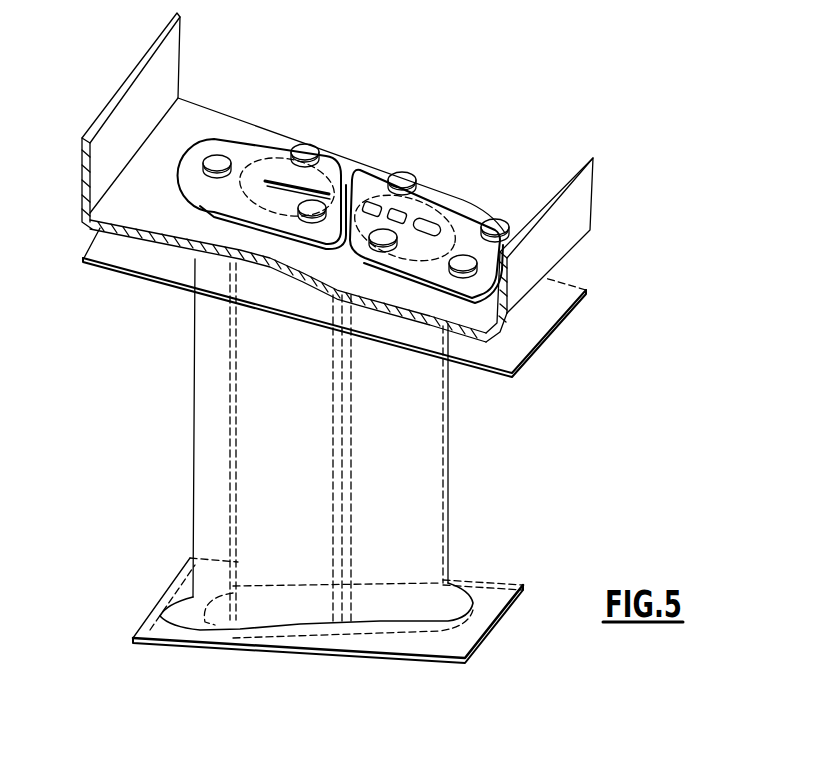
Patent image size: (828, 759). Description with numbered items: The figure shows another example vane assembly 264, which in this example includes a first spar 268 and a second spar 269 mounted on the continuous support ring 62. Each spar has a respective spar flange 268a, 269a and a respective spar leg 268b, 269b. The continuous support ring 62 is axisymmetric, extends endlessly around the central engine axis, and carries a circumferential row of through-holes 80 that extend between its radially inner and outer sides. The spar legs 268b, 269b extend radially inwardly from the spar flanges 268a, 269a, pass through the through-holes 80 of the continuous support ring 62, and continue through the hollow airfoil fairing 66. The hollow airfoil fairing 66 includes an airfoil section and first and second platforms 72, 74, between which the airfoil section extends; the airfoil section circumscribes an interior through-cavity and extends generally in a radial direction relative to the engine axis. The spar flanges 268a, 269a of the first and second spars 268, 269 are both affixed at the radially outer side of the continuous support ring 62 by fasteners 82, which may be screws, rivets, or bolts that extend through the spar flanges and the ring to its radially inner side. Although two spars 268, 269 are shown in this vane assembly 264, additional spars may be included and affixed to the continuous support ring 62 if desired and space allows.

The continuous support ring 62 is at (352, 157).
The first spar 268 is at (234, 142).
The spar flange 268a is at (253, 153).
The through-holes 80 is at (284, 209).
The fasteners 82 is at (494, 226).
The second spar 269 is at (466, 250).
The spar flange 269a is at (453, 207).
The first platform 72 is at (530, 326).
The hollow airfoil fairing 66 is at (208, 397).
The spar leg 268b is at (233, 453).
The spar leg 269b is at (448, 474).
The second platform 74 is at (476, 622).
The vane assembly 264 is at (606, 447).